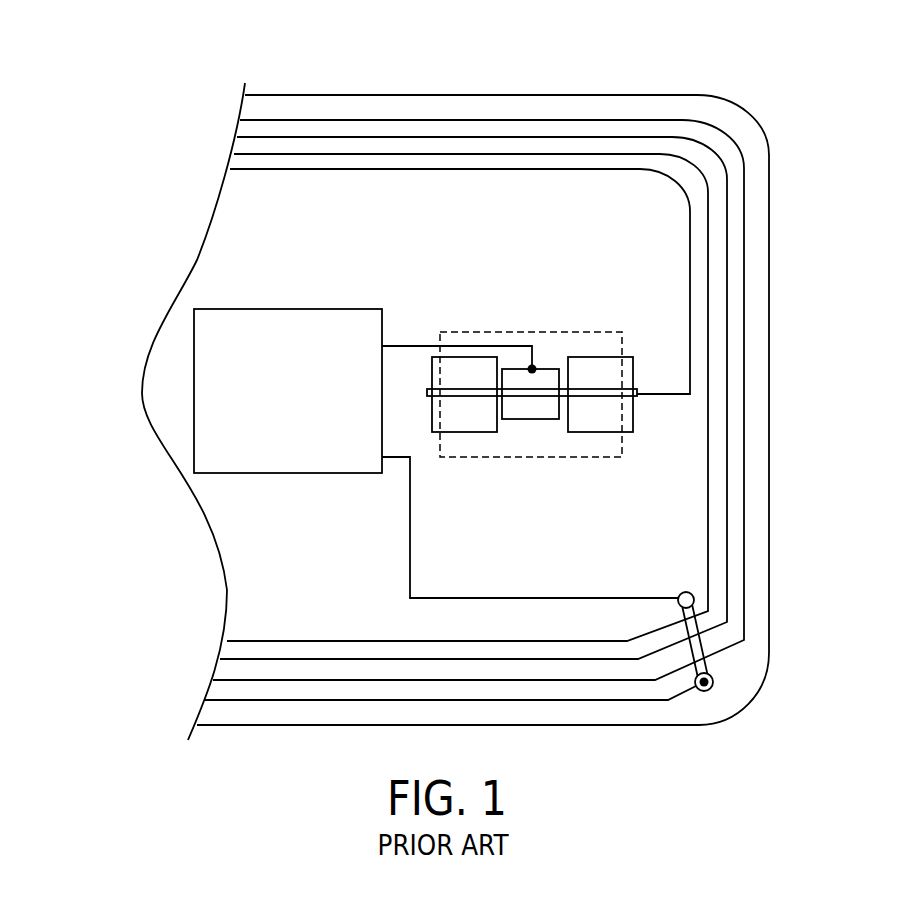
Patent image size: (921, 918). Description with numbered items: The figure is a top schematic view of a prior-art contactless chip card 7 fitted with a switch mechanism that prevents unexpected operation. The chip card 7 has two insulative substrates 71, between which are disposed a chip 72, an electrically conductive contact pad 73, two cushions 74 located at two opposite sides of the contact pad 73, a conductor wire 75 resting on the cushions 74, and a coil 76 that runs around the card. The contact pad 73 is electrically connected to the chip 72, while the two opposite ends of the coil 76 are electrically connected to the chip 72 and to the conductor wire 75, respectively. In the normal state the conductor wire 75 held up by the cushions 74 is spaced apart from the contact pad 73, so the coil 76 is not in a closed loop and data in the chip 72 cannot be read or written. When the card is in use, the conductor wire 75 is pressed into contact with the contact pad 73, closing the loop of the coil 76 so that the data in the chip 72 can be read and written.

The chip card 7 is at (819, 155).
The insulative substrate 71 is at (728, 121).
The chip 72 is at (207, 339).
The contact pad 73 is at (533, 410).
The cushion 74 is at (467, 365).
The conductor wire 75 is at (603, 396).
The coil 76 is at (410, 120).